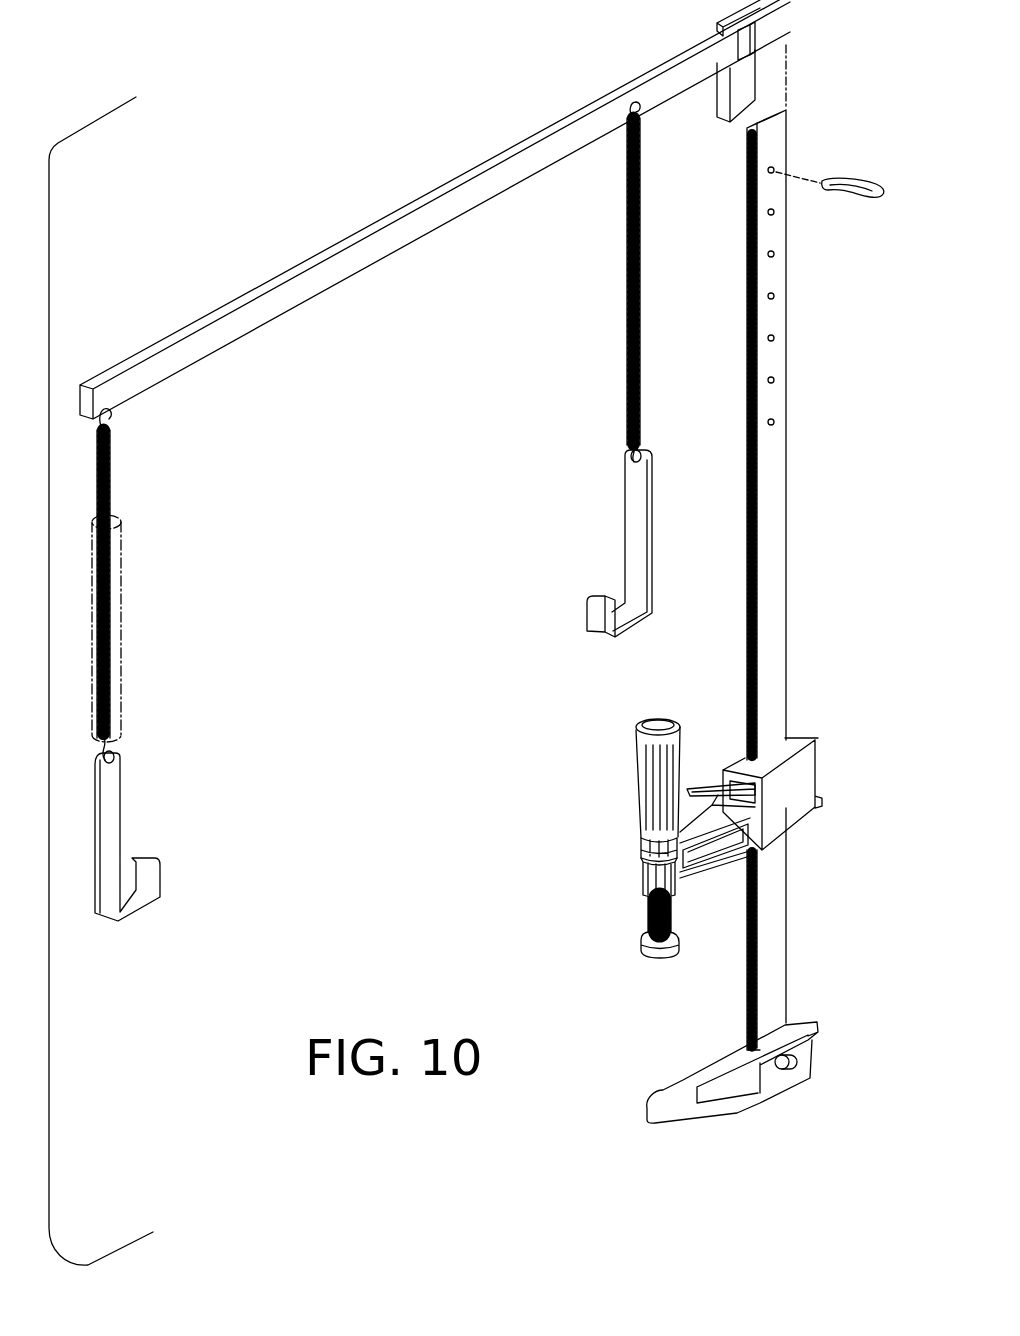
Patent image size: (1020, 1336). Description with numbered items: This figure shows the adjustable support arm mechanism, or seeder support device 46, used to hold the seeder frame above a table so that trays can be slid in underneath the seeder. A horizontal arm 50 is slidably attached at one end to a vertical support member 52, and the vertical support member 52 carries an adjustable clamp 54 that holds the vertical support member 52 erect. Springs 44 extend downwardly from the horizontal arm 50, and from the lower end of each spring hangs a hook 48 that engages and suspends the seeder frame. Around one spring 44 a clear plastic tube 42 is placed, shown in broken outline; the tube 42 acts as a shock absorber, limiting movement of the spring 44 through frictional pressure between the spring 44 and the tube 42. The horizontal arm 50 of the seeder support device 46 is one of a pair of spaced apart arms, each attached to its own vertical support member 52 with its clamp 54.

The clear plastic tube 42 is at (121, 633).
The spring 44 is at (113, 478).
The seeder support device 46 is at (206, 358).
The hook 48 is at (122, 827).
The horizontal arm 50 is at (278, 296).
The vertical support member 52 is at (786, 470).
The adjustable clamp 54 is at (815, 770).